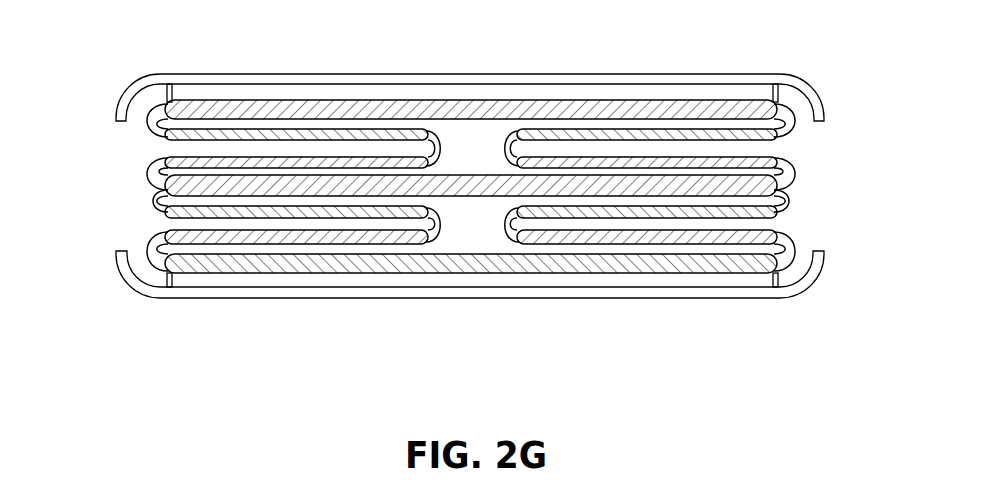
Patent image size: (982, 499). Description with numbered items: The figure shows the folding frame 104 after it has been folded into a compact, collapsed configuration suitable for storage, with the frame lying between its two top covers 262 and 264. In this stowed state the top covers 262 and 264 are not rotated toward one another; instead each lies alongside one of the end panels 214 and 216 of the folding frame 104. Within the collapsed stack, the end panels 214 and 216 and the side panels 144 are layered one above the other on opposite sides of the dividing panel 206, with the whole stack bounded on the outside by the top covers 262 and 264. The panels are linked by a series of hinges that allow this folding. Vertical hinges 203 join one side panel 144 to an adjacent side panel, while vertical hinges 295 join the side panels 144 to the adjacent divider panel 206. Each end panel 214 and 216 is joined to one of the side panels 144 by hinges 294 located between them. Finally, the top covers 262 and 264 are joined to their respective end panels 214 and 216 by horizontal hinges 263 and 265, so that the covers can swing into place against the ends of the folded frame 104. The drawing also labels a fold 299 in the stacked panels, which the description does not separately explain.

The folding frame 104 is at (460, 191).
The side panels 144 is at (657, 165).
The vertical hinges 203 is at (437, 220).
The dividing panel 206 is at (245, 188).
The end panel 214 is at (493, 273).
The end panel 216 is at (364, 105).
The top cover 262 is at (790, 297).
The horizontal hinge 263 is at (795, 280).
The top cover 264 is at (783, 73).
The horizontal hinge 265 is at (150, 83).
The hinges 294 is at (793, 120).
The vertical hinges 295 is at (792, 176).
The right middle fold 299 is at (517, 133).